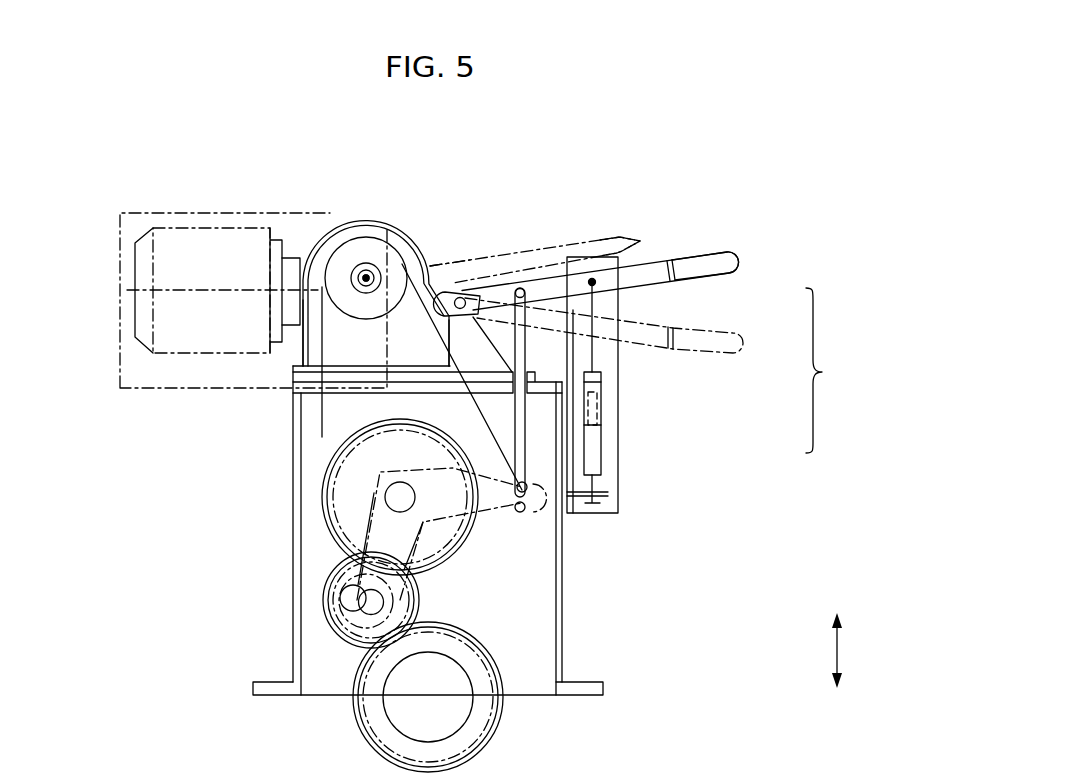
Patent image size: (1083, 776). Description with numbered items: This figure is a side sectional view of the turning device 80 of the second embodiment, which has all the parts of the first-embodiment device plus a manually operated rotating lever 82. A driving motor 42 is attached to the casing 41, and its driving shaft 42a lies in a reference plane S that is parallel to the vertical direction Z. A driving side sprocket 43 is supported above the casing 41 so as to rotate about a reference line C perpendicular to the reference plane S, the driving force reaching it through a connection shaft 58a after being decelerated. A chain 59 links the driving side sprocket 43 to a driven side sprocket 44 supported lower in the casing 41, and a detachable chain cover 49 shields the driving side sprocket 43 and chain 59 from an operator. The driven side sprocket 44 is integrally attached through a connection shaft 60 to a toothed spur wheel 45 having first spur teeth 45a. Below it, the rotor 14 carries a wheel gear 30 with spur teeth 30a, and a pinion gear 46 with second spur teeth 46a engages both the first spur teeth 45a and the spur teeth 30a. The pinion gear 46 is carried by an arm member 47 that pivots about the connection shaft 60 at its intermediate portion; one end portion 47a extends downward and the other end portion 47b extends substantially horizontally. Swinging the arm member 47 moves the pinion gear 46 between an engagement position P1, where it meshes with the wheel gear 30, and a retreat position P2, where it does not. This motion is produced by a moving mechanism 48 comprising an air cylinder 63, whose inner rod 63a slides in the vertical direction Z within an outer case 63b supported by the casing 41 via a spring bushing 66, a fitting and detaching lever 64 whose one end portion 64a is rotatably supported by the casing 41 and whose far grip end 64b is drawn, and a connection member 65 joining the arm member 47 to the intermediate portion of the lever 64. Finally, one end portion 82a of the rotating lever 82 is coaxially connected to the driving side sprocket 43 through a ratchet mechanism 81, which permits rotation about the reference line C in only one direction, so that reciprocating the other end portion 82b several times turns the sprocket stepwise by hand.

The turning device 80 is at (178, 192).
The reference plane S is at (222, 213).
The driving motor 42 is at (172, 340).
The driving shaft 42a is at (212, 292).
The driving side sprocket 43 is at (366, 240).
The ratchet mechanism 81 is at (385, 222).
The chain cover 49 is at (426, 252).
The chain 59 is at (318, 432).
The connection shaft 58a is at (338, 245).
The reference line C is at (358, 272).
The rotating lever 82 is at (530, 250).
The one end portion of the rotating lever 82a is at (443, 265).
The other end portion of the rotating lever 82b is at (622, 240).
The moving mechanism 48 is at (644, 345).
The fitting and detaching lever 64 is at (637, 279).
The one end portion of the fitting and detaching lever 64a is at (497, 288).
The lever grip 64b is at (710, 258).
The connection member 65 is at (522, 347).
The air cylinder 63 is at (614, 453).
The inner rod 63a is at (594, 357).
The outer case 63b is at (603, 410).
The spring bushing 66 is at (598, 484).
The casing 41 is at (298, 525).
The driven side sprocket 44 is at (398, 419).
The toothed spur wheel 45 is at (438, 532).
The first spur teeth 45a is at (443, 552).
The connection shaft 60 is at (395, 496).
The pinion gear 46 is at (412, 590).
The second spur teeth 46a is at (413, 610).
The arm member 47 is at (498, 515).
The one end portion of the arm member 47a is at (350, 626).
The other end portion of the arm member 47b is at (510, 482).
The engagement position P1 is at (308, 600).
The retreat position P2 is at (302, 565).
The wheel gear 30 is at (478, 724).
The spur teeth 30a is at (478, 750).
The rotor 14 is at (418, 703).
The vertical direction Z is at (847, 650).